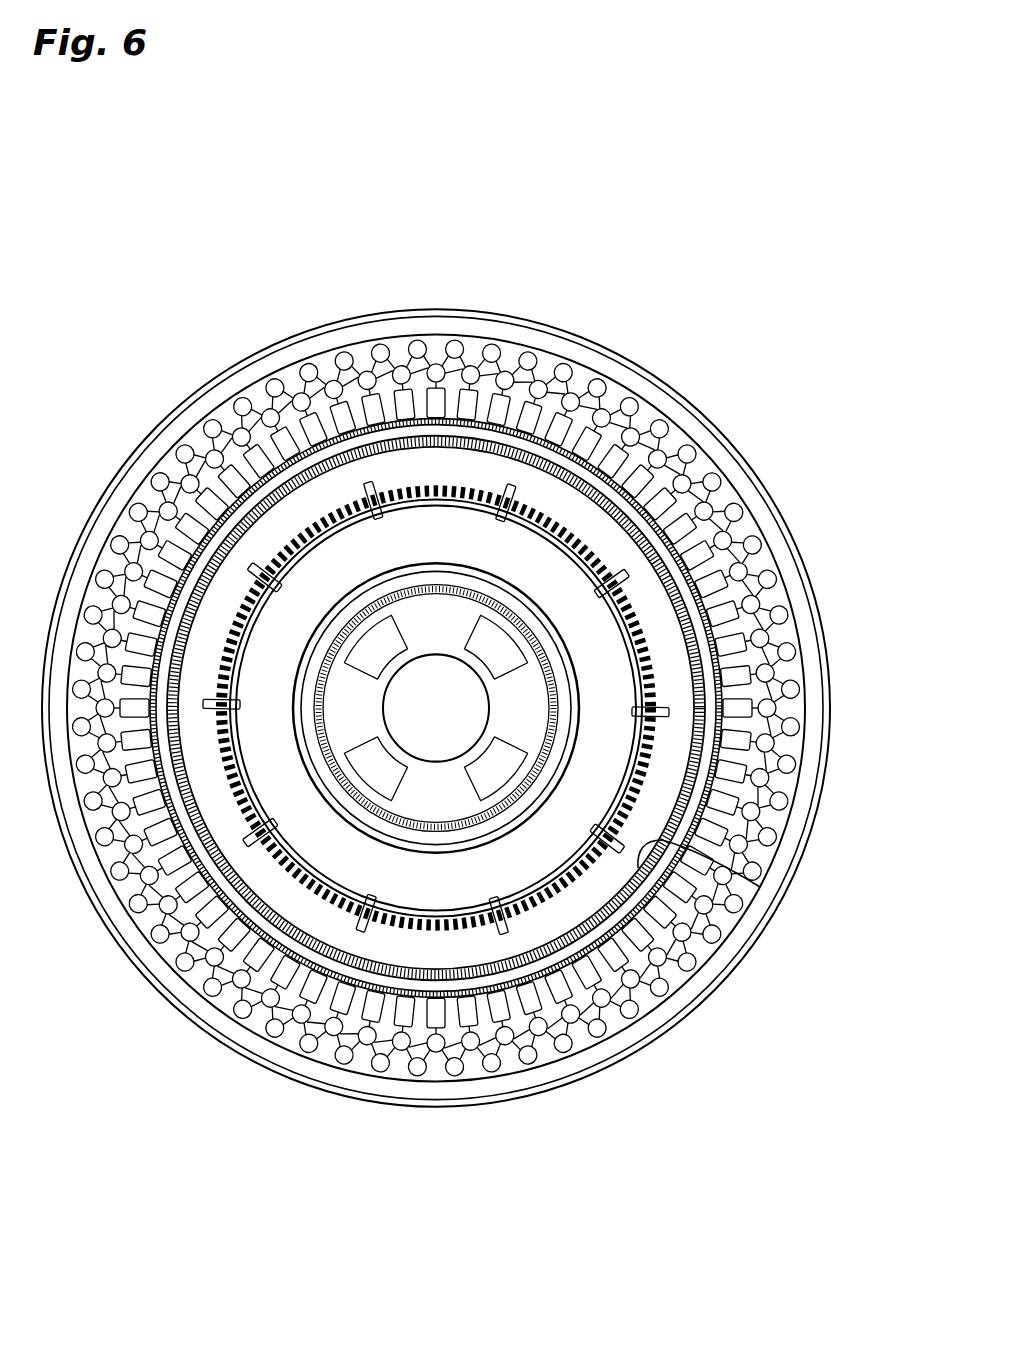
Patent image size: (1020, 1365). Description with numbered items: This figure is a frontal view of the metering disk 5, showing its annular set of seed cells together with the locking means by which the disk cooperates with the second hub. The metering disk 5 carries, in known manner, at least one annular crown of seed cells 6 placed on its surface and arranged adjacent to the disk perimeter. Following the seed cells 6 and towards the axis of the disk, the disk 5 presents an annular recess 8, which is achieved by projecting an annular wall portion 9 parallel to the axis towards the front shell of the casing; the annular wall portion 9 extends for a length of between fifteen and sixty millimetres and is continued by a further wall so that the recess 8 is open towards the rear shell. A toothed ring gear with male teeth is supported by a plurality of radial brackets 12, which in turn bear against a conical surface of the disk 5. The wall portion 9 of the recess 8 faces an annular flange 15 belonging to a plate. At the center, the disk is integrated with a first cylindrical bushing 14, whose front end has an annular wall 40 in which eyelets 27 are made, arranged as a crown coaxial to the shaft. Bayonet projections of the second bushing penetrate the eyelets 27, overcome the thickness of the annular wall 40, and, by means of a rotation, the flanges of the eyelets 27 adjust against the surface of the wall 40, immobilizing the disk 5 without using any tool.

The metering disk 5 is at (640, 1090).
The annular crown of seed cells 6 is at (487, 372).
The annular recess 8 is at (668, 770).
The annular wall portion 9 is at (645, 838).
The radial brackets 12 is at (588, 578).
The first cylindrical bushing 14 is at (436, 752).
The annular flange 15 is at (268, 818).
The eyelets 27 is at (382, 778).
The annular wall 40 is at (423, 628).